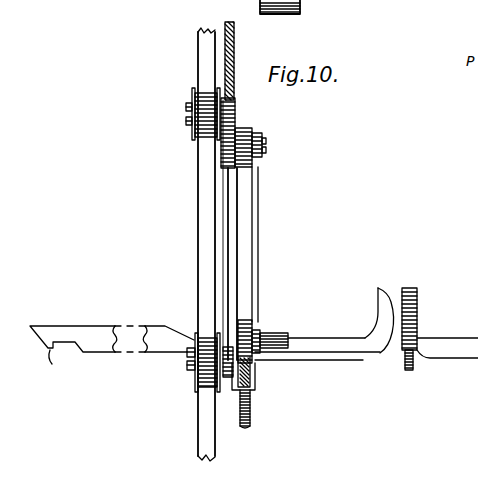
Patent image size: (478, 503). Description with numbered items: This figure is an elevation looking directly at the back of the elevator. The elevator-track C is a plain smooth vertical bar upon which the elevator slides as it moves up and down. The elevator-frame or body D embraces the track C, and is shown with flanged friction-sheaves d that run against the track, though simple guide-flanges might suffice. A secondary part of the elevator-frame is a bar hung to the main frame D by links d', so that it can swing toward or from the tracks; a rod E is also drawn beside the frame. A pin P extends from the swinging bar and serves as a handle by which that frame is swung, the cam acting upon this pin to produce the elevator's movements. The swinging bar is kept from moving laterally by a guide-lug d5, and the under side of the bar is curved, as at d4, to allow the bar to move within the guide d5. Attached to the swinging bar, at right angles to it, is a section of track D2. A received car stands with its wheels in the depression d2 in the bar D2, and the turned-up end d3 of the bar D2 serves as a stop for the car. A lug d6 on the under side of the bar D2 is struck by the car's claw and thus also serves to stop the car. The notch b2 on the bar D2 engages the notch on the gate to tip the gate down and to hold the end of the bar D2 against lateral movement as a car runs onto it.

The elevator-track C is at (198, 232).
The elevator-frame D is at (230, 230).
The shaft E is at (234, 50).
The flanged friction-sheaves d is at (190, 246).
The links d' is at (265, 244).
The pin P is at (280, 332).
The depression d2 is at (477, 345).
The turned-up end d3 is at (389, 297).
The curved under side d4 is at (246, 428).
The guide-lug d5 is at (257, 386).
The lug d6 is at (364, 360).
The section of track D2 is at (118, 327).
The notch b2 is at (58, 365).